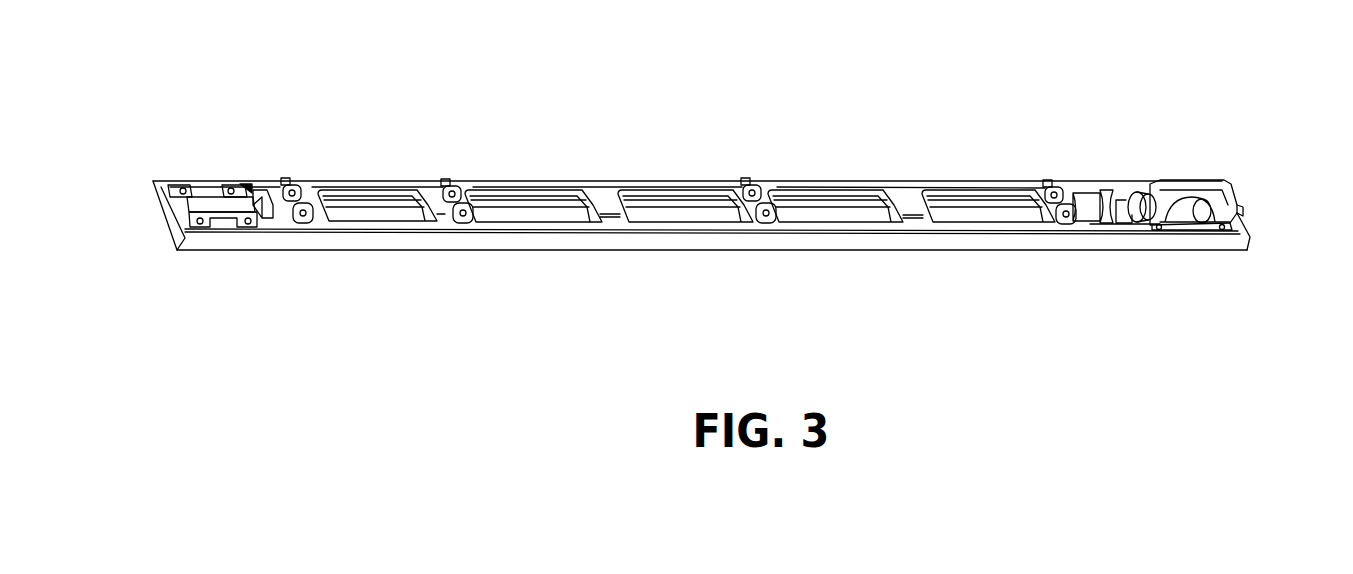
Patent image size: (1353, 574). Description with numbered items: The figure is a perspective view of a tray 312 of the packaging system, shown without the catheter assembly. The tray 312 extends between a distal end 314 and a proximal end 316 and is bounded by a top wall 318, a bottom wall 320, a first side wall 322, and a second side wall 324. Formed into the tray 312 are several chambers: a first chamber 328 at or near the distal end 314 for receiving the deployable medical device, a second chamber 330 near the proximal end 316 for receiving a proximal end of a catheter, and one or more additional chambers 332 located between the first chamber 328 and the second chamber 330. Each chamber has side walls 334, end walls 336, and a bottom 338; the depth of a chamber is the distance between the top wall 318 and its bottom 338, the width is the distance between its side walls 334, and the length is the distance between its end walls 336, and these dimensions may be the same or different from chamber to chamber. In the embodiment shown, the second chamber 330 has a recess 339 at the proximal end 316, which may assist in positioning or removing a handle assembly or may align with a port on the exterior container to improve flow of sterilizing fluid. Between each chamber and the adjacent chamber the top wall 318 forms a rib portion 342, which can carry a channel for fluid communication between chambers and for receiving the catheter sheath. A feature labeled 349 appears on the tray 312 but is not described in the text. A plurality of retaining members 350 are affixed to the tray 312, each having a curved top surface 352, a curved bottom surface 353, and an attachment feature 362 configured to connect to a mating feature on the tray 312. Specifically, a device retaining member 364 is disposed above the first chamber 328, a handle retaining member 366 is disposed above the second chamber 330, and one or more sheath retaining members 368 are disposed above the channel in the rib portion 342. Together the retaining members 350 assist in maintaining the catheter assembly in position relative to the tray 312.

The tray 312 is at (965, 110).
The distal end 314 is at (157, 203).
The proximal end 316 is at (1231, 219).
The top wall 318 is at (606, 188).
The bottom wall 320 is at (605, 249).
The first side wall 322 is at (658, 237).
The second side wall 324 is at (634, 183).
The first chamber 328 is at (257, 190).
The second chamber 330 is at (1093, 192).
The additional chamber 332 is at (720, 207).
The side walls 334 is at (512, 186).
The end walls 336 is at (577, 181).
The bottom 338 is at (537, 213).
The recess 339 is at (1239, 208).
The rib portion 342 is at (918, 222).
The recess 349 is at (918, 198).
The retaining member 350 is at (311, 240).
The top surface 352 is at (448, 188).
The bottom surface 353 is at (447, 226).
The attachment feature 362 is at (475, 232).
The device retaining member 364 is at (216, 188).
The handle retaining member 366 is at (1182, 185).
The sheath retaining member 368 is at (767, 183).